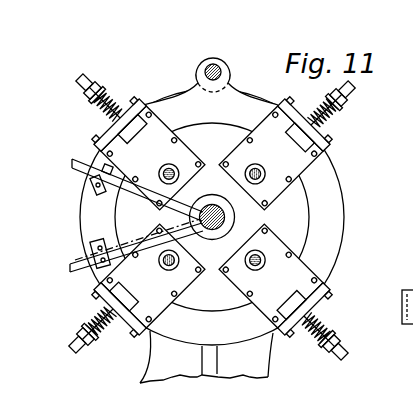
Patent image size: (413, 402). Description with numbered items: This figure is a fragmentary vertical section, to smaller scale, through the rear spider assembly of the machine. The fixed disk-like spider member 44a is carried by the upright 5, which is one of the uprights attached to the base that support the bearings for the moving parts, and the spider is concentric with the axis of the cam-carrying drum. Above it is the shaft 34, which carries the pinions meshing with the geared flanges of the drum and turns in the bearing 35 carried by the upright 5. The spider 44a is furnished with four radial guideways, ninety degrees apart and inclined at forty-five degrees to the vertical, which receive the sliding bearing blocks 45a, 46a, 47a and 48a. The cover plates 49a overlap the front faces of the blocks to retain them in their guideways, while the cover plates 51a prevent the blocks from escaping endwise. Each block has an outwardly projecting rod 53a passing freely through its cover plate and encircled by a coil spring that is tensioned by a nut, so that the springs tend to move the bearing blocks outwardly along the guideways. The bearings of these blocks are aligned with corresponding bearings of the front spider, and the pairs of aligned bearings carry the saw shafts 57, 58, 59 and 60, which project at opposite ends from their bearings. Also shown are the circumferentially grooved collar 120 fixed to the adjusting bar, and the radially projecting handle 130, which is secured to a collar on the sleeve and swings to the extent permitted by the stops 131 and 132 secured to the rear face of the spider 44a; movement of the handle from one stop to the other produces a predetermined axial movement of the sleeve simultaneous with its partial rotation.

The upright 5 is at (257, 361).
The shaft 34 is at (210, 68).
The bearing 35 is at (227, 60).
The spider member 44a is at (332, 193).
The bearing block 45a is at (300, 258).
The bearing block 46a is at (122, 326).
The bearing block 47a is at (118, 108).
The bearing block 48a is at (314, 131).
The cover plate 49a is at (288, 287).
The cover plate 51a is at (312, 310).
The projecting rod 53a is at (345, 100).
The saw shaft 57 is at (170, 165).
The saw shaft 58 is at (258, 170).
The saw shaft 59 is at (244, 291).
The saw shaft 60 is at (186, 283).
The grooved collar 120 is at (370, 394).
The handle 130 is at (77, 158).
The stop 131 is at (160, 205).
The stop 132 is at (110, 301).